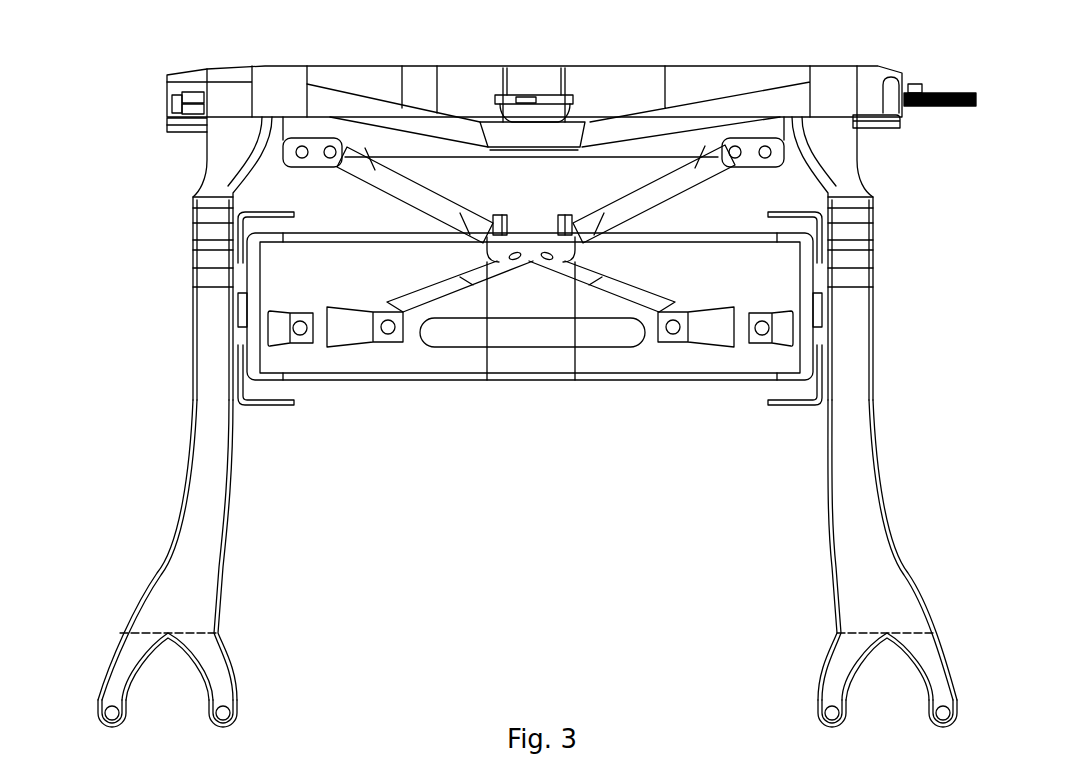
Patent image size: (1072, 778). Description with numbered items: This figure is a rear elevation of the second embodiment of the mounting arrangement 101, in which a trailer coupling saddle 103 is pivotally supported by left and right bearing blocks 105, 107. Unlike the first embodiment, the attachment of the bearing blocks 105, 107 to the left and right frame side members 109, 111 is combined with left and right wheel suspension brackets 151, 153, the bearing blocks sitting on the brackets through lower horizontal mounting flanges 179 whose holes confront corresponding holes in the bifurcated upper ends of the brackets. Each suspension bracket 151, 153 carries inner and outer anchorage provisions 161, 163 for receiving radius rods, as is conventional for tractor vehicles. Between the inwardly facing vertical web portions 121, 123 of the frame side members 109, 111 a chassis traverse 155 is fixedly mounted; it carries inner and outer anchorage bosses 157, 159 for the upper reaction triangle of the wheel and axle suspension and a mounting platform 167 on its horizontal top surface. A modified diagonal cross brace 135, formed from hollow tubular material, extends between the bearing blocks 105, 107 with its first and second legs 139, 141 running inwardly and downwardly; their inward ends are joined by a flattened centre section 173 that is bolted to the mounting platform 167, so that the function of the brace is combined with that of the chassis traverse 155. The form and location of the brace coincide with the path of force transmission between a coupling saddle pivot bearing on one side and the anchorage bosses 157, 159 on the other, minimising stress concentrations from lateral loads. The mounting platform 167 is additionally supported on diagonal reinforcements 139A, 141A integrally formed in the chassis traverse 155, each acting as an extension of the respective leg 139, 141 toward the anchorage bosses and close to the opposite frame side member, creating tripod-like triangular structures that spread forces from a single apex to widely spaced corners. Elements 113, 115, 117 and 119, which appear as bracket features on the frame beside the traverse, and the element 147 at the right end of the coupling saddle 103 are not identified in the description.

The mounting arrangement 101 is at (890, 310).
The coupling saddle 103 is at (367, 92).
The left bearing block 105 is at (223, 158).
The right bearing block 107 is at (843, 158).
The left frame side member 109 is at (233, 332).
The right frame side member 111 is at (830, 332).
The upper left mounting bracket 113 is at (273, 214).
The upper right mounting bracket 115 is at (797, 220).
The lower left mounting bracket 117 is at (277, 408).
The lower right mounting bracket 119 is at (783, 408).
The inwardly facing vertical web portion 121 is at (242, 347).
The inwardly facing vertical web portion 123 is at (823, 347).
The diagonal cross brace 135 is at (548, 223).
The first leg 139 is at (405, 185).
The diagonal reinforcement 139A is at (632, 292).
The second leg 141 is at (662, 185).
The diagonal reinforcement 141A is at (430, 293).
The bolt 147 is at (957, 97).
The left wheel suspension bracket 151 is at (172, 592).
The right wheel suspension bracket 153 is at (873, 593).
The chassis traverse 155 is at (555, 358).
The inner anchorage boss 157 is at (345, 332).
The outer anchorage boss 159 is at (302, 343).
The inner anchorage provision 161 is at (233, 712).
The outer anchorage provision 163 is at (103, 708).
The mounting platform 167 is at (533, 247).
The flattened centre section 173 is at (517, 227).
The lower horizontal mounting flange 179 is at (213, 192).